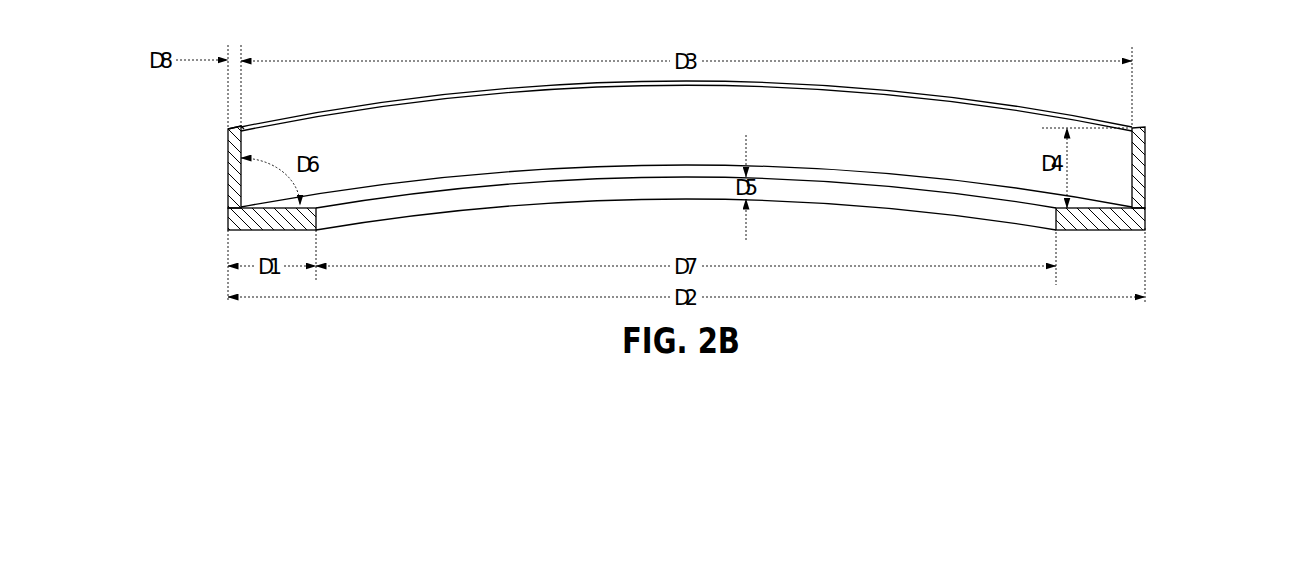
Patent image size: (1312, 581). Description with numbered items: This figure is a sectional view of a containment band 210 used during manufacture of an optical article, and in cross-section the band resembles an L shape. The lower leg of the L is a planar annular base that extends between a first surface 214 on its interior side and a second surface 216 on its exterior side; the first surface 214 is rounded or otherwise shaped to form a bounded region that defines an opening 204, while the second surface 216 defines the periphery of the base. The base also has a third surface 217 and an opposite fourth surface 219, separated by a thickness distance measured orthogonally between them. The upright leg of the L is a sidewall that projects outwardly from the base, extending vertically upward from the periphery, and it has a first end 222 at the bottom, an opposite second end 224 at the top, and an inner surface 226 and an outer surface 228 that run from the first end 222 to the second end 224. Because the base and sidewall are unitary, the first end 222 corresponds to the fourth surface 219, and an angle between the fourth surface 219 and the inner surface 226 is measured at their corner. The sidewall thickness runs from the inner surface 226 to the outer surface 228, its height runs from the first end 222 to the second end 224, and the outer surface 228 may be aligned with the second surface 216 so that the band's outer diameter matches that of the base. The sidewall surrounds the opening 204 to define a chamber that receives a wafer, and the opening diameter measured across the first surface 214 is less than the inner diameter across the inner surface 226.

The containment band 210 is at (1198, 46).
The opening 204 is at (813, 232).
The first surface 214 is at (342, 215).
The second surface 216 is at (226, 219).
The third surface 217 is at (548, 203).
The fourth surface 219 is at (531, 178).
The first end 222 is at (1130, 243).
The second end 224 is at (1024, 102).
The inner surface 226 is at (245, 137).
The outer surface 228 is at (226, 157).